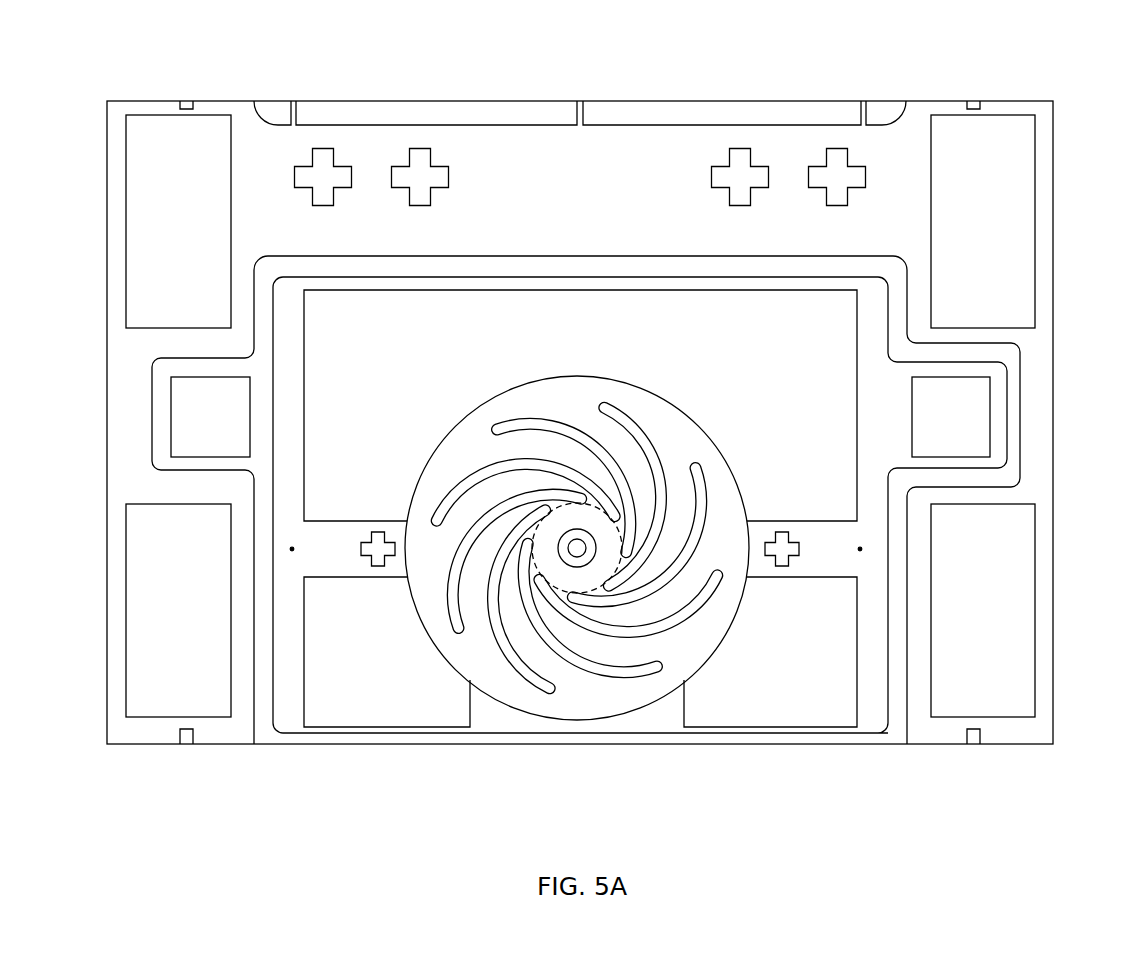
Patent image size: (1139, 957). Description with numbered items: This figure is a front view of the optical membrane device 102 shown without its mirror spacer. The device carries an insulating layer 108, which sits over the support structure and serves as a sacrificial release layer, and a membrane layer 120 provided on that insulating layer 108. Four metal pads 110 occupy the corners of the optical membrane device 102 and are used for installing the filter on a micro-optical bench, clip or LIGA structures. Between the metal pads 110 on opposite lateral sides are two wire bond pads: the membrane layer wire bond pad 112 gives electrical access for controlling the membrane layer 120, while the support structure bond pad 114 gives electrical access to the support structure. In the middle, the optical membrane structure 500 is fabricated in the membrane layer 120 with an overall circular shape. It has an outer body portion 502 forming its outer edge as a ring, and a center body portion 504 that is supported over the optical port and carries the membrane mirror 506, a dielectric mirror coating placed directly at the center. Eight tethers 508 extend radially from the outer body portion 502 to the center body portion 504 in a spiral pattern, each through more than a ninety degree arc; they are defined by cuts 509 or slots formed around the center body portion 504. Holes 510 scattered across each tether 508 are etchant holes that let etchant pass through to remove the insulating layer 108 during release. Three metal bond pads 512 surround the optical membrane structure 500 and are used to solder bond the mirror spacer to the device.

The optical membrane device 102 is at (502, 80).
The insulating layer 108 is at (440, 258).
The metal pads 110 is at (133, 222).
The membrane layer wire bond pad 112 is at (980, 443).
The support structure bond pad 114 is at (183, 430).
The membrane layer 120 is at (598, 282).
The optical membrane structure 500 is at (580, 531).
The outer body portion 502 is at (566, 378).
The center body portion 504 is at (546, 540).
The membrane mirror 506 is at (563, 572).
The tethers 508 is at (613, 531).
The cuts 509 is at (652, 668).
The holes 510 is at (600, 531).
The metal bond pads 512 is at (496, 306).